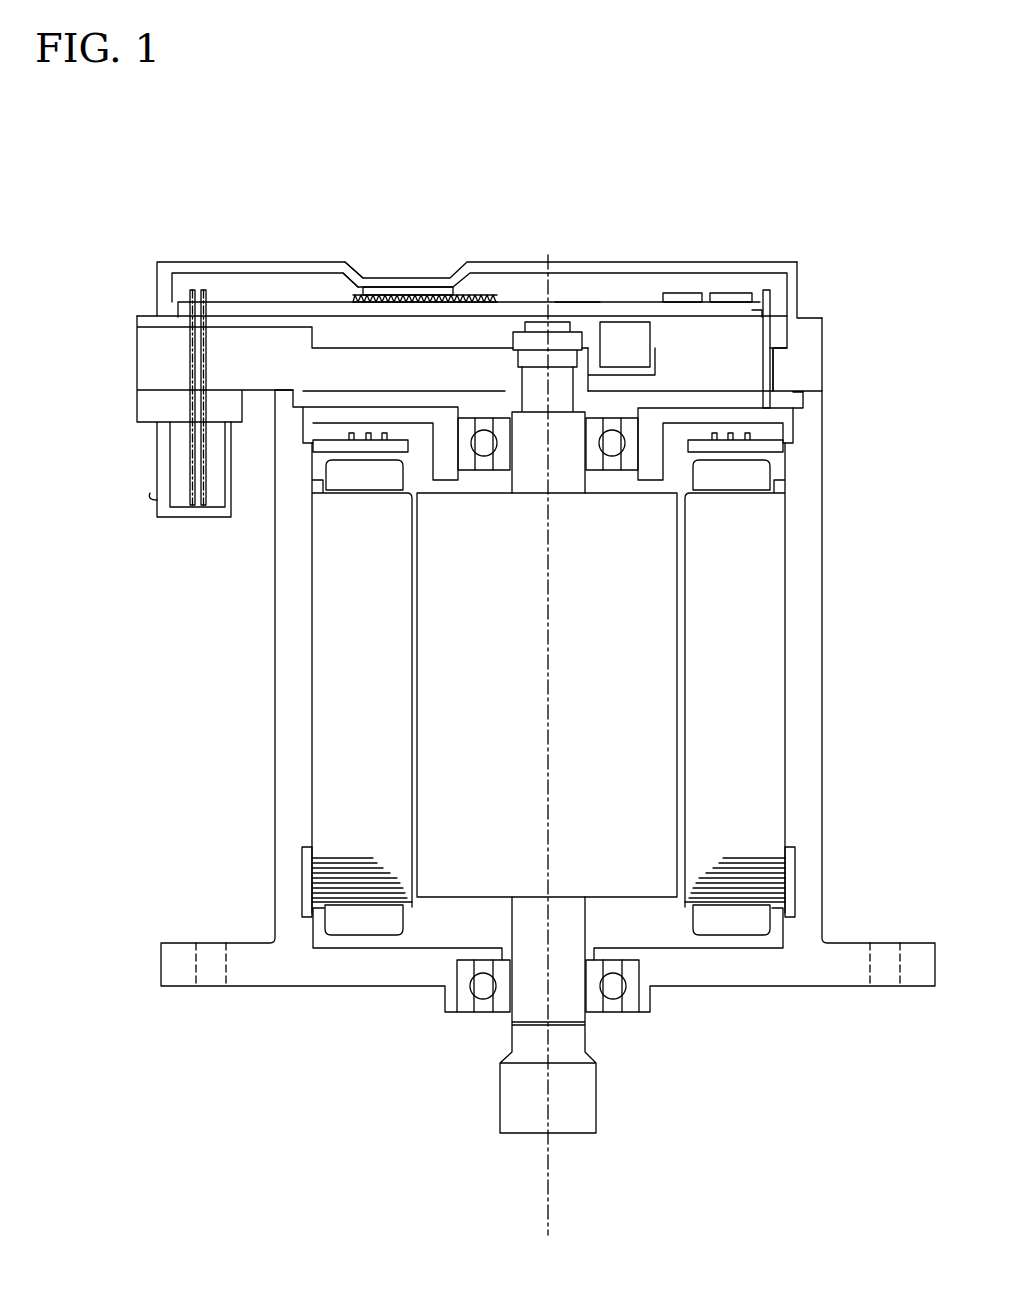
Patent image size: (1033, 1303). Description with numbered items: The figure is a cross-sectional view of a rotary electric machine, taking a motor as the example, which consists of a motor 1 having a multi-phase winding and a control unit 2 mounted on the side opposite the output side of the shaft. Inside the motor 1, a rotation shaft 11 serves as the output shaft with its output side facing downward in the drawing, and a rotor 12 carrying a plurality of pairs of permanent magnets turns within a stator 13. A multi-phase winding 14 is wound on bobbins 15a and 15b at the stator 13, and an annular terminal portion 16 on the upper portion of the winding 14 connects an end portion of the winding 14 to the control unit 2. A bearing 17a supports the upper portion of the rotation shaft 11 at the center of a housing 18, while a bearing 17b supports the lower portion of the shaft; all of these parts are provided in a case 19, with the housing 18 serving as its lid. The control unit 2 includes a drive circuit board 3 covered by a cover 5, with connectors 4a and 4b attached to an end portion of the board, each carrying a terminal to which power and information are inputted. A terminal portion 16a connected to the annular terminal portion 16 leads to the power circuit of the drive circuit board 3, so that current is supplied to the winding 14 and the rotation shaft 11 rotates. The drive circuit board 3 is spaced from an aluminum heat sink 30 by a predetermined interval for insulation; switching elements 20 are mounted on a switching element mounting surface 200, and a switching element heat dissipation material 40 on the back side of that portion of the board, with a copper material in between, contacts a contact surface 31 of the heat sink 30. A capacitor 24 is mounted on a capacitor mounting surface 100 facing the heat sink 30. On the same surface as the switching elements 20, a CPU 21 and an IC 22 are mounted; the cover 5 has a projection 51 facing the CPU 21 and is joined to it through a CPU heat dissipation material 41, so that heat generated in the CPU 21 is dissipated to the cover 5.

The motor 1 is at (548, 665).
The control unit 2 is at (712, 240).
The drive circuit board 3 is at (600, 352).
The connector 4a is at (157, 445).
The connector 4b is at (157, 470).
The cover 5 is at (206, 262).
The rotation shaft 11 is at (565, 1012).
The rotor 12 is at (448, 683).
The stator 13 is at (752, 720).
The multi-phase winding 14 is at (740, 480).
The bobbin 15a is at (325, 493).
The bobbin 15b is at (320, 908).
The annular terminal portion 16 is at (752, 448).
The terminal portion 16a is at (771, 357).
The bearing 17a is at (493, 418).
The bearing 17b is at (455, 1000).
The housing 18 is at (783, 417).
The case 19 is at (808, 832).
The switching elements 20 is at (772, 300).
The CPU 21 is at (388, 276).
The IC 22 is at (510, 348).
The capacitor 24 is at (628, 340).
The heat sink 30 is at (792, 373).
The contact surface 31 is at (757, 317).
The switching element heat dissipation material 40 is at (770, 293).
The CPU heat dissipation material 41 is at (353, 268).
The projection 51 is at (413, 273).
The capacitor mounting surface 100 is at (250, 320).
The switching element mounting surface 200 is at (567, 300).